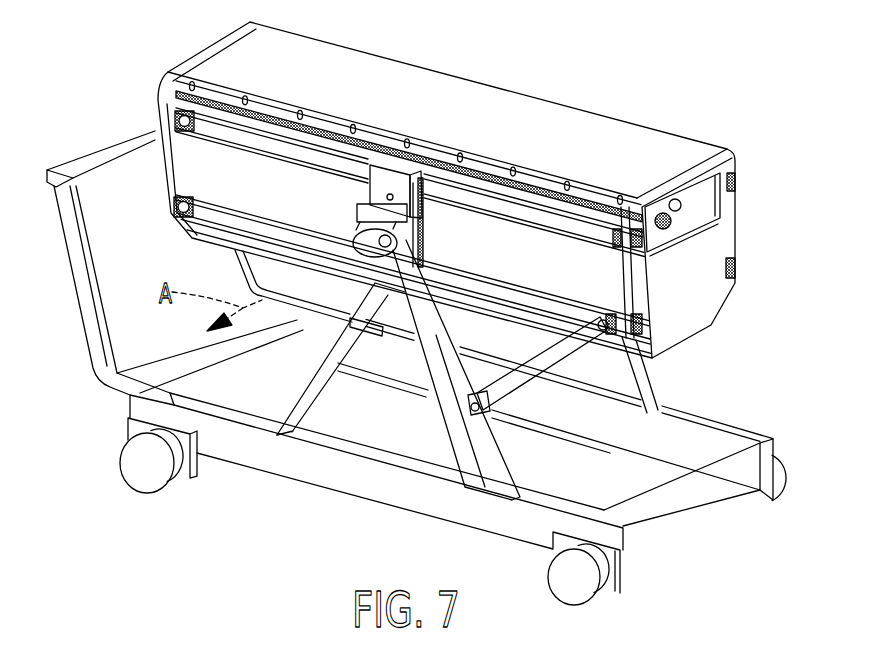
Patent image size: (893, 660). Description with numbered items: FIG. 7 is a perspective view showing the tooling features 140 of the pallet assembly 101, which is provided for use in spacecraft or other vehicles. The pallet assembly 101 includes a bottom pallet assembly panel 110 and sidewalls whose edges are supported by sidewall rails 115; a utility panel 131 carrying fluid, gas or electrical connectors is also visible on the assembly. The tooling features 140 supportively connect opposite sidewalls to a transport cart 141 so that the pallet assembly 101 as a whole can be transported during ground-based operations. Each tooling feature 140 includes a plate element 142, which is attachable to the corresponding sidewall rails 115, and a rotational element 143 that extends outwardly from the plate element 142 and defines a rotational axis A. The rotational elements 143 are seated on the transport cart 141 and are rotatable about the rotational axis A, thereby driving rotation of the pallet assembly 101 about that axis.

The pallet assembly 101 is at (434, 190).
The bottom pallet assembly panel 110 is at (687, 278).
The sidewall rails 115 is at (212, 173).
The utility panel 131 is at (682, 218).
The tooling features 140 is at (340, 234).
The transport cart 141 is at (312, 467).
The plate element 142 is at (391, 194).
The rotational element 143 is at (372, 200).